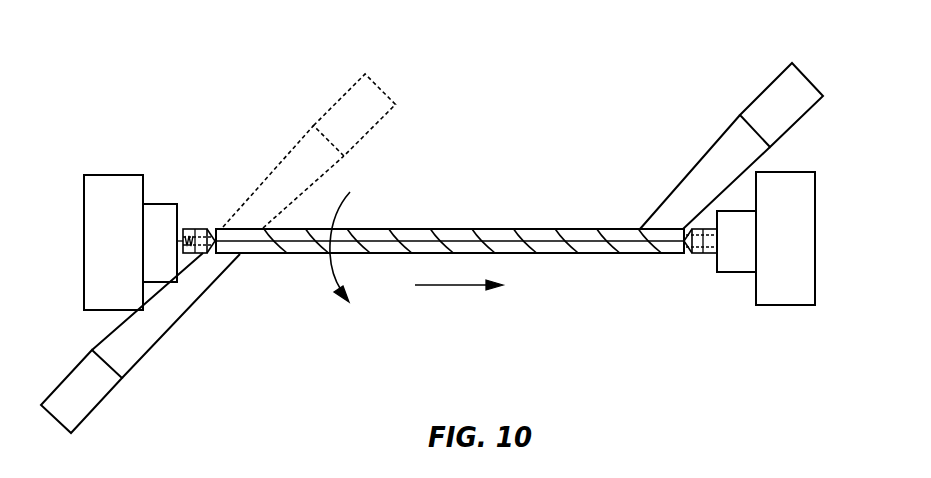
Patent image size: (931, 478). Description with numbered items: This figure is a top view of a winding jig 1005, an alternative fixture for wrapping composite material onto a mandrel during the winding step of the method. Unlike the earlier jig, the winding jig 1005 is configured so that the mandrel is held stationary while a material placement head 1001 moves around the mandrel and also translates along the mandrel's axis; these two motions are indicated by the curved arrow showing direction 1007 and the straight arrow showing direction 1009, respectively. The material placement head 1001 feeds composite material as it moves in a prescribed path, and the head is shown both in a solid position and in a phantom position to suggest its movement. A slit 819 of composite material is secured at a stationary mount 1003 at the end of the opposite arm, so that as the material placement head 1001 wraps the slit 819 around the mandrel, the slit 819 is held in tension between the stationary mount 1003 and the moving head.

The material placement head 1001 is at (762, 90).
The stationary mount 1003 is at (90, 416).
The winding jig 1005 is at (232, 86).
The direction 1007 is at (340, 210).
The direction 1009 is at (447, 285).
The slit 819 is at (194, 301).